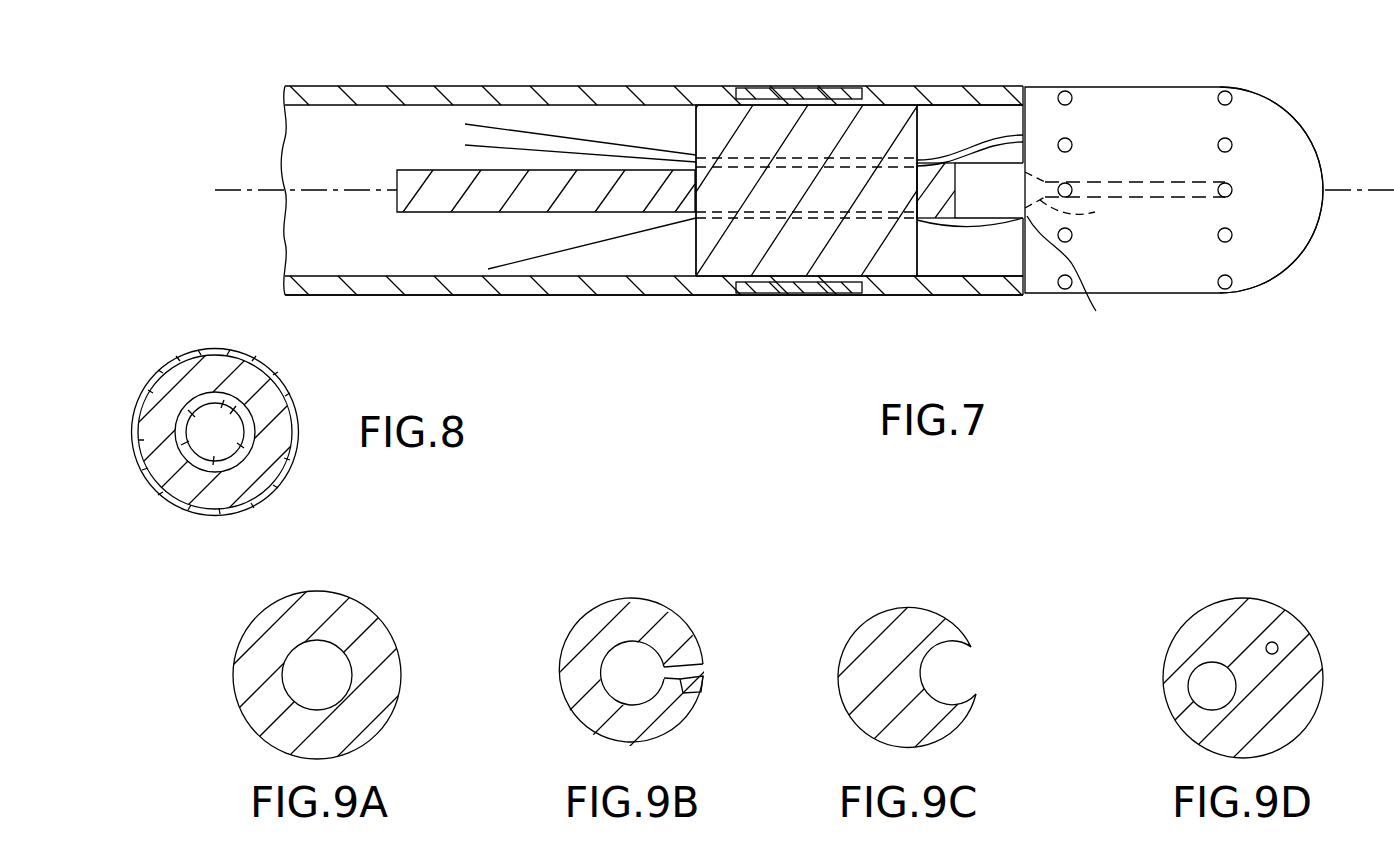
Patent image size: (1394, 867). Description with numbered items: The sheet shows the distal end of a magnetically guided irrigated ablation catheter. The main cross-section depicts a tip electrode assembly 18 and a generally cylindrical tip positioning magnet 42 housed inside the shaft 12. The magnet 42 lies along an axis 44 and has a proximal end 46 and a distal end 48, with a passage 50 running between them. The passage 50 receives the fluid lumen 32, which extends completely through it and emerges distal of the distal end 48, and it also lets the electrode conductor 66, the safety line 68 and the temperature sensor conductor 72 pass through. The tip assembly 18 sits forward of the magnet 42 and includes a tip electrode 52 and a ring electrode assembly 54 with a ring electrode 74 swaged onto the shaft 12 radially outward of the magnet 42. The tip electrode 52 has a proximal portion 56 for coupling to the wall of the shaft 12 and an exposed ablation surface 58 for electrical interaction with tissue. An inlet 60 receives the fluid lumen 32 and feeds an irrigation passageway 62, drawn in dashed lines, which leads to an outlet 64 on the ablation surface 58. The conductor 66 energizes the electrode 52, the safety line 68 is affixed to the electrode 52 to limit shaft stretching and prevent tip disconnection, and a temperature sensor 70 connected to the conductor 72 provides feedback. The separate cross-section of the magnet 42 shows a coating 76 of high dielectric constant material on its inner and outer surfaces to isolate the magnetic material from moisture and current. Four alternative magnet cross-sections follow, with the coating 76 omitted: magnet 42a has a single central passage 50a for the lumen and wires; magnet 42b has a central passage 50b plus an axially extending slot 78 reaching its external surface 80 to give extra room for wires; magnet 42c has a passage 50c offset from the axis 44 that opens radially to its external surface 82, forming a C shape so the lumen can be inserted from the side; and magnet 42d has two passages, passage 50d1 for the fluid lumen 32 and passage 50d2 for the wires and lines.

In FIG. 7, the shaft 12 is at (403, 88).
In FIG. 7, the tip electrode assembly 18 is at (958, 300).
In FIG. 7, the fluid lumen 32 is at (424, 212).
In FIG. 7, the tip positioning magnet 42 is at (862, 126).
In FIG. 8, the tip positioning magnet 42 is at (285, 412).
In FIG. 9A, the magnet 42a is at (355, 593).
In FIG. 9B, the magnet 42b is at (653, 599).
In FIG. 9C, the magnet 42c is at (933, 599).
In FIG. 9D, the magnet 42d is at (1286, 599).
In FIG. 7, the axis 44 is at (1358, 190).
In FIG. 7, the proximal end 46 is at (696, 262).
In FIG. 7, the distal end 48 is at (917, 262).
In FIG. 7, the passage 50 is at (836, 214).
In FIG. 8, the passage 50 is at (214, 433).
In FIG. 9A, the passage 50a is at (317, 675).
In FIG. 9B, the passage 50b is at (632, 673).
In FIG. 9C, the passage 50c is at (952, 673).
In FIG. 9D, the passage 50d1 is at (1202, 702).
In FIG. 9D, the passage 50d2 is at (1278, 646).
In FIG. 7, the tip electrode 52 is at (1258, 102).
In FIG. 7, the ring electrode assembly 54 is at (810, 86).
In FIG. 7, the proximal portion 56 is at (1004, 243).
In FIG. 7, the ablation surface 58 is at (1278, 118).
In FIG. 7, the inlet 60 is at (955, 196).
In FIG. 7, the irrigation passageway 62 is at (1096, 214).
In FIG. 7, the outlet 64 is at (1226, 190).
In FIG. 7, the conductor 66 is at (466, 148).
In FIG. 7, the safety line 68 is at (500, 129).
In FIG. 7, the temperature sensor 70 is at (1070, 278).
In FIG. 7, the conductor 72 is at (537, 260).
In FIG. 7, the ring electrode 74 is at (746, 286).
In FIG. 8, the coating 76 is at (188, 356).
In FIG. 9B, the slot 78 is at (698, 700).
In FIG. 9B, the external surface 80 is at (689, 657).
In FIG. 9C, the external surface 82 is at (946, 630).